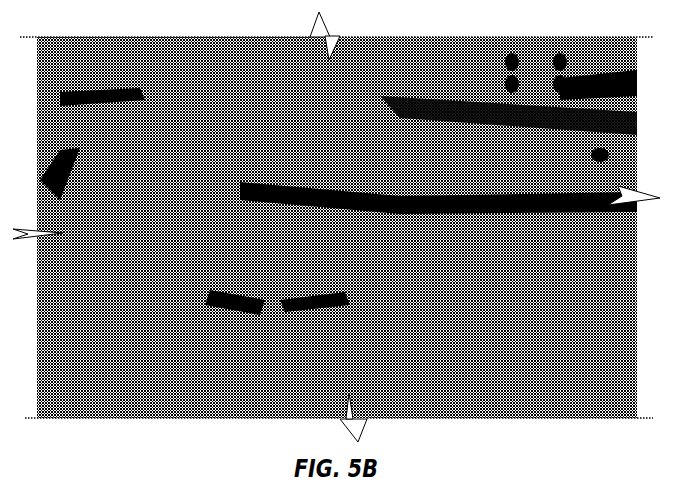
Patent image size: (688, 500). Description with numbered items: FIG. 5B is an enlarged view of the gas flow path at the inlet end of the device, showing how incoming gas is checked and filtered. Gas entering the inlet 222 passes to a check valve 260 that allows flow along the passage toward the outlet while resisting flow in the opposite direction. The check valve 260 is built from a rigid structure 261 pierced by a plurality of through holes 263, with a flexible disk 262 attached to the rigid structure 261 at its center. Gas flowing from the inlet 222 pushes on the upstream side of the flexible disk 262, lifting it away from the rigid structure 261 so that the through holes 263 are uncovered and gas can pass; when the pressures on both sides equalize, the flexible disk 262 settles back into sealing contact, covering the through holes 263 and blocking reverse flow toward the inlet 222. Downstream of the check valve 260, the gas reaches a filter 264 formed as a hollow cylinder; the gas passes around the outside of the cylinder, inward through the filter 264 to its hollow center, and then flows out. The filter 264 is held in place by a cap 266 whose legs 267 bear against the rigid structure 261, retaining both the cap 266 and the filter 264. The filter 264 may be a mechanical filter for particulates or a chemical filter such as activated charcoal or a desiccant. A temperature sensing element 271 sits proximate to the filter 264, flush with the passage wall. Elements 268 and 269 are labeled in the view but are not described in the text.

The inlet 222 is at (82, 234).
The check valve 260 is at (362, 172).
The rigid structure 261 is at (288, 203).
The flexible disk 262 is at (288, 226).
The through holes 263 is at (240, 241).
The filter 264 is at (482, 318).
The cap 266 is at (390, 252).
The legs 267 is at (337, 292).
The sheath 268 is at (146, 280).
The housing wall 269 is at (145, 126).
The temperature sensing element 271 is at (538, 140).